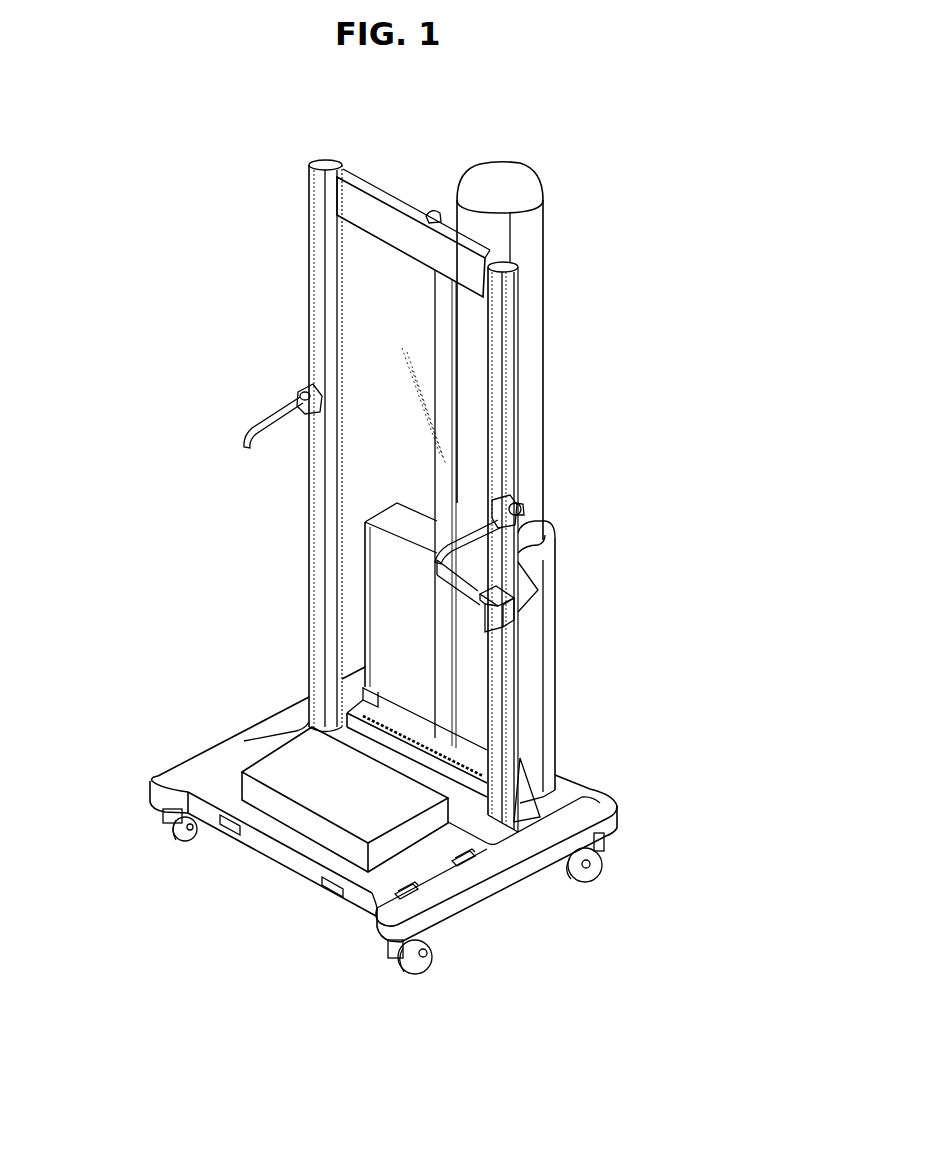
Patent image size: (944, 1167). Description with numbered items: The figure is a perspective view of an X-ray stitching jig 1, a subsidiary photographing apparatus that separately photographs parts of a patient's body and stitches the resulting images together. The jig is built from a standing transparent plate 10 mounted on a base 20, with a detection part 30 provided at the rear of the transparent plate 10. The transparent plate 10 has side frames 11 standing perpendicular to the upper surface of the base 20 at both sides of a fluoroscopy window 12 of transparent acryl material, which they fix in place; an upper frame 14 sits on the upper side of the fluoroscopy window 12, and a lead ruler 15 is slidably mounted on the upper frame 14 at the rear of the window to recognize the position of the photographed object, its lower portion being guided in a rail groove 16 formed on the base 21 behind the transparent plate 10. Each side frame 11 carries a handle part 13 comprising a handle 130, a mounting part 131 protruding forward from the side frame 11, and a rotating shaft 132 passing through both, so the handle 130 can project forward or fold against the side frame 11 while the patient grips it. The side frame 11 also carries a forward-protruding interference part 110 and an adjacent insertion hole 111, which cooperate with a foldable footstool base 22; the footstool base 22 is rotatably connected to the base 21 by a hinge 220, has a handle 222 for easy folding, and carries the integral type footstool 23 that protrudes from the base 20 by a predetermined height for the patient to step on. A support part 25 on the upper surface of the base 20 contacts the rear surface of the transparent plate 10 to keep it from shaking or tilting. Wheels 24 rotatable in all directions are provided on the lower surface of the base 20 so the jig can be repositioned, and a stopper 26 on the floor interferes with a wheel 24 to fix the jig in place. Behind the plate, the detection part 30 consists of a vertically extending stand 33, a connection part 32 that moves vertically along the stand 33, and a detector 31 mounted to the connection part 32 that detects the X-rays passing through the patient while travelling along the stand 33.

The X-ray stitching jig 1 is at (158, 105).
The transparent plate 10 is at (292, 323).
The side frame 11 is at (316, 228).
The fluoroscopy window 12 is at (372, 325).
The handle part 13 is at (295, 400).
The upper frame 14 is at (383, 190).
The lead ruler 15 is at (436, 292).
The rail groove 16 is at (346, 712).
The base 20 is at (226, 722).
The base 21 is at (182, 782).
The footstool base 22 is at (332, 862).
The integral type footstool 23 is at (325, 805).
The wheel 24 is at (163, 812).
The support part 25 is at (526, 796).
The stopper 26 is at (592, 882).
The detection part 30 is at (558, 365).
The detector 31 is at (535, 686).
The connection part 32 is at (548, 578).
The stand 33 is at (540, 266).
The interference part 110 is at (512, 627).
The insertion hole 111 is at (478, 609).
The handle 130 is at (247, 438).
The mounting part 131 is at (318, 404).
The rotating shaft 132 is at (528, 514).
The hinge 220 is at (410, 880).
The handle 222 is at (222, 832).